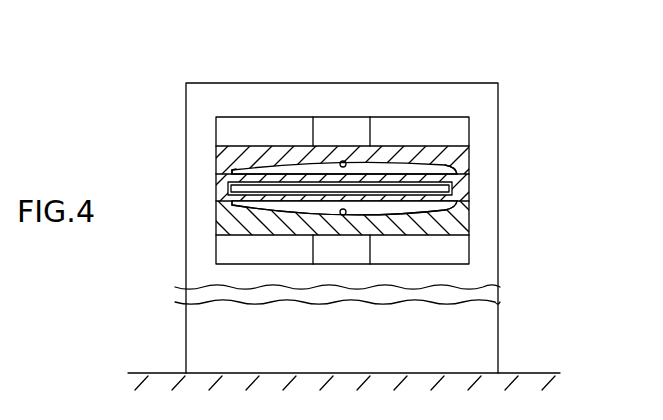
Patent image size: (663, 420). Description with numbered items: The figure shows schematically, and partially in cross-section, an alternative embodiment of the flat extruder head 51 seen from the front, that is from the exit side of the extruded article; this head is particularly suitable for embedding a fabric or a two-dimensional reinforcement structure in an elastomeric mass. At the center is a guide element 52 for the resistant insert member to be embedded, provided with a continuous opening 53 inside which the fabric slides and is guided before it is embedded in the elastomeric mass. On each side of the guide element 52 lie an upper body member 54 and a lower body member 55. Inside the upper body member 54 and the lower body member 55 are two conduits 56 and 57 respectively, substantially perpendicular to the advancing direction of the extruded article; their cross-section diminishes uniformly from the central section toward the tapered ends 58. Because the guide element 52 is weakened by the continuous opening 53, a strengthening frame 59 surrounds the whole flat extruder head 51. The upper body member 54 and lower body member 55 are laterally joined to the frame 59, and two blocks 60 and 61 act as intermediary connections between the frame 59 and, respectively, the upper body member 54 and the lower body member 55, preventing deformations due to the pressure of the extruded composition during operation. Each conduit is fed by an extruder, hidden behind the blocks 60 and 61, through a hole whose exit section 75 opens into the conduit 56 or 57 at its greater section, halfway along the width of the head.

The flat extruder head 51 is at (503, 110).
The guide element 52 is at (280, 214).
The continuous opening 53 is at (301, 196).
The upper body member 54 is at (231, 157).
The lower body member 55 is at (408, 229).
The conduit 56 is at (357, 170).
The conduit 57 is at (373, 214).
The tapered ends 58 is at (220, 203).
The strengthening frame 59 is at (314, 103).
The block 60 is at (340, 121).
The block 61 is at (332, 252).
The exit section 75 is at (339, 163).